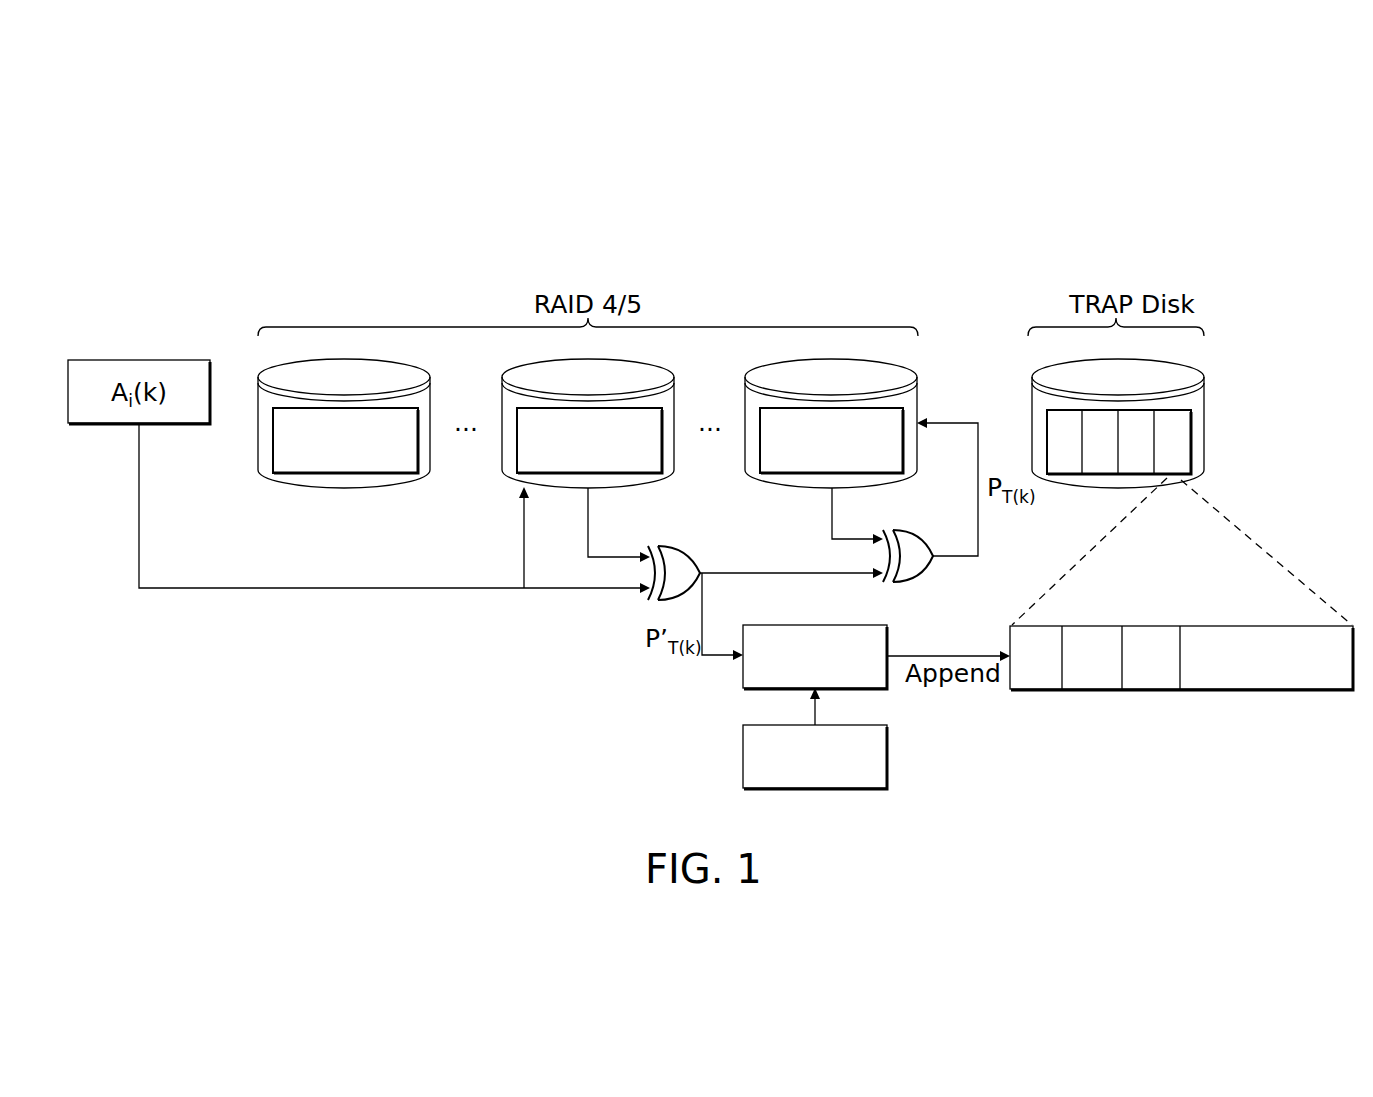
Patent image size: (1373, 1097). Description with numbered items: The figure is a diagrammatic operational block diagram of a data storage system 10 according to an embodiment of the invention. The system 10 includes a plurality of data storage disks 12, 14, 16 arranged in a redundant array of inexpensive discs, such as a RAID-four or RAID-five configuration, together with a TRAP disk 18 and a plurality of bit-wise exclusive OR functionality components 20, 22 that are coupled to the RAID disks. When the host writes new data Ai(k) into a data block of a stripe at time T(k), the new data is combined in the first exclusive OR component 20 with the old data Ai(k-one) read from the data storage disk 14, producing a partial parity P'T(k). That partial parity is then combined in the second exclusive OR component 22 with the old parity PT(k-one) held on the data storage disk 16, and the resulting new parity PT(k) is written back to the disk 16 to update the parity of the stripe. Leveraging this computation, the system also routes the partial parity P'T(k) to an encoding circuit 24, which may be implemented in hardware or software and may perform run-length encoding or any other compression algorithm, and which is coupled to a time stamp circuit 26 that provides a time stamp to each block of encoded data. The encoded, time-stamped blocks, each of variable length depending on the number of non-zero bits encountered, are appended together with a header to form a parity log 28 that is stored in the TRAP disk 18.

The system 10 is at (797, 246).
The data storage disk 12 is at (393, 489).
The data storage disk 14 is at (674, 400).
The data storage disk 16 is at (917, 400).
The TRAP disk 18 is at (1204, 400).
The bit-wise exclusive OR functionality component 20 is at (686, 550).
The bit-wise exclusive OR functionality component 22 is at (929, 540).
The encoding circuit 24 is at (743, 689).
The time stamp circuit 26 is at (887, 771).
The parity log 28 is at (1157, 690).